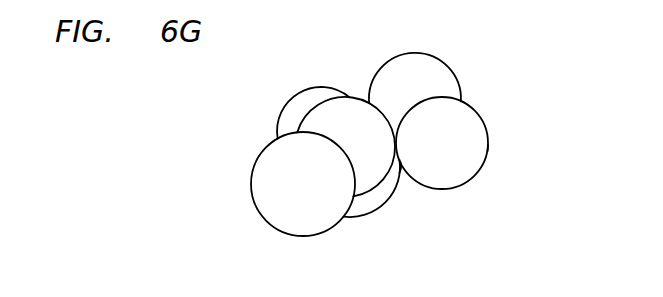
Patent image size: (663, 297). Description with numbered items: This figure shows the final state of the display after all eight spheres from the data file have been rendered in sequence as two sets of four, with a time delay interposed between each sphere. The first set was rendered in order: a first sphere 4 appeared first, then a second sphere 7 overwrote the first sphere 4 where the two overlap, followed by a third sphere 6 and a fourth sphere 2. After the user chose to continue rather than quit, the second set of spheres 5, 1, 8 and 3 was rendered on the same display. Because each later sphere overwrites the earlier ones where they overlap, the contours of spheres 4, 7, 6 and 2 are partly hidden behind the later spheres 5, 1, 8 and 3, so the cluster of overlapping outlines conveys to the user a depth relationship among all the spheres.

The sphere 1 is at (357, 97).
The fourth sphere 2 is at (283, 113).
The sphere 3 is at (250, 183).
The first sphere 4 is at (399, 169).
The sphere 5 is at (430, 54).
The third sphere 6 is at (467, 101).
The second sphere 7 is at (366, 218).
The sphere 8 is at (488, 145).